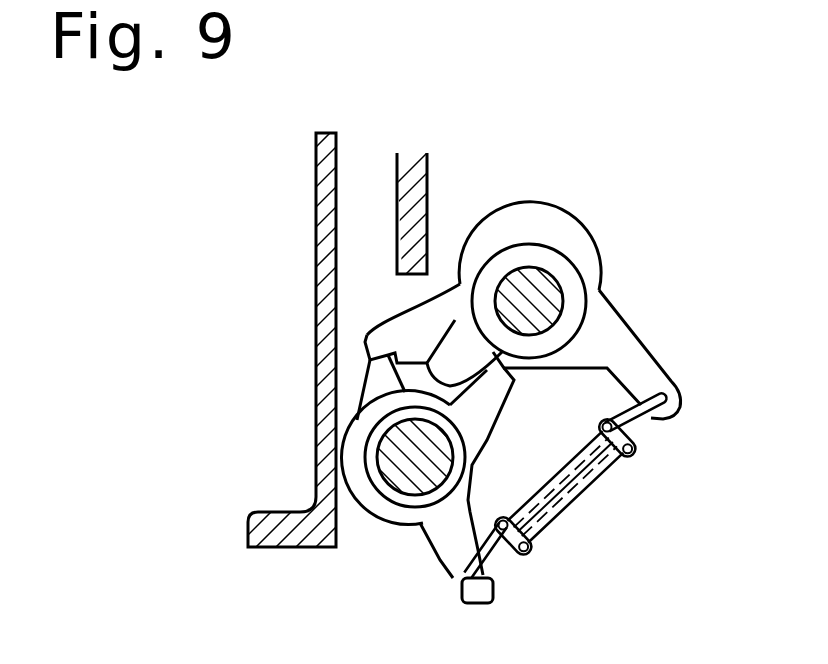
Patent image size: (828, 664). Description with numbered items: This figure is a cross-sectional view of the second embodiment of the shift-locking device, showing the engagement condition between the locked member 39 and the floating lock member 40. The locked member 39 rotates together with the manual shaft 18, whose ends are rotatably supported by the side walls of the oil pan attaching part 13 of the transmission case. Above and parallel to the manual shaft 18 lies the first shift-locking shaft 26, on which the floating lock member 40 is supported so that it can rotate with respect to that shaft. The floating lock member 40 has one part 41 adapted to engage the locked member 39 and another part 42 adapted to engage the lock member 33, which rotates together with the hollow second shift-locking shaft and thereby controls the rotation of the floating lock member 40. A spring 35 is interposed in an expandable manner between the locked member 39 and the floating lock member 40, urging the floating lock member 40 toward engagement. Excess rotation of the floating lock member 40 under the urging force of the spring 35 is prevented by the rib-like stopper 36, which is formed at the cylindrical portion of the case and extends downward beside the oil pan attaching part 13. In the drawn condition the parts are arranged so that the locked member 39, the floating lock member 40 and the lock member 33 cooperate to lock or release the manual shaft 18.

The oil pan attaching part 13 is at (325, 242).
The rib-like stopper 36 is at (410, 183).
The floating lock member 40 is at (535, 234).
The one part of the floating lock member 41 is at (455, 285).
The another part of the floating lock member 42 is at (550, 263).
The first shift-locking shaft 26 is at (547, 297).
The lock member 33 is at (490, 408).
The locked member 39 is at (448, 545).
The manual shaft 18 is at (407, 483).
The spring 35 is at (530, 550).